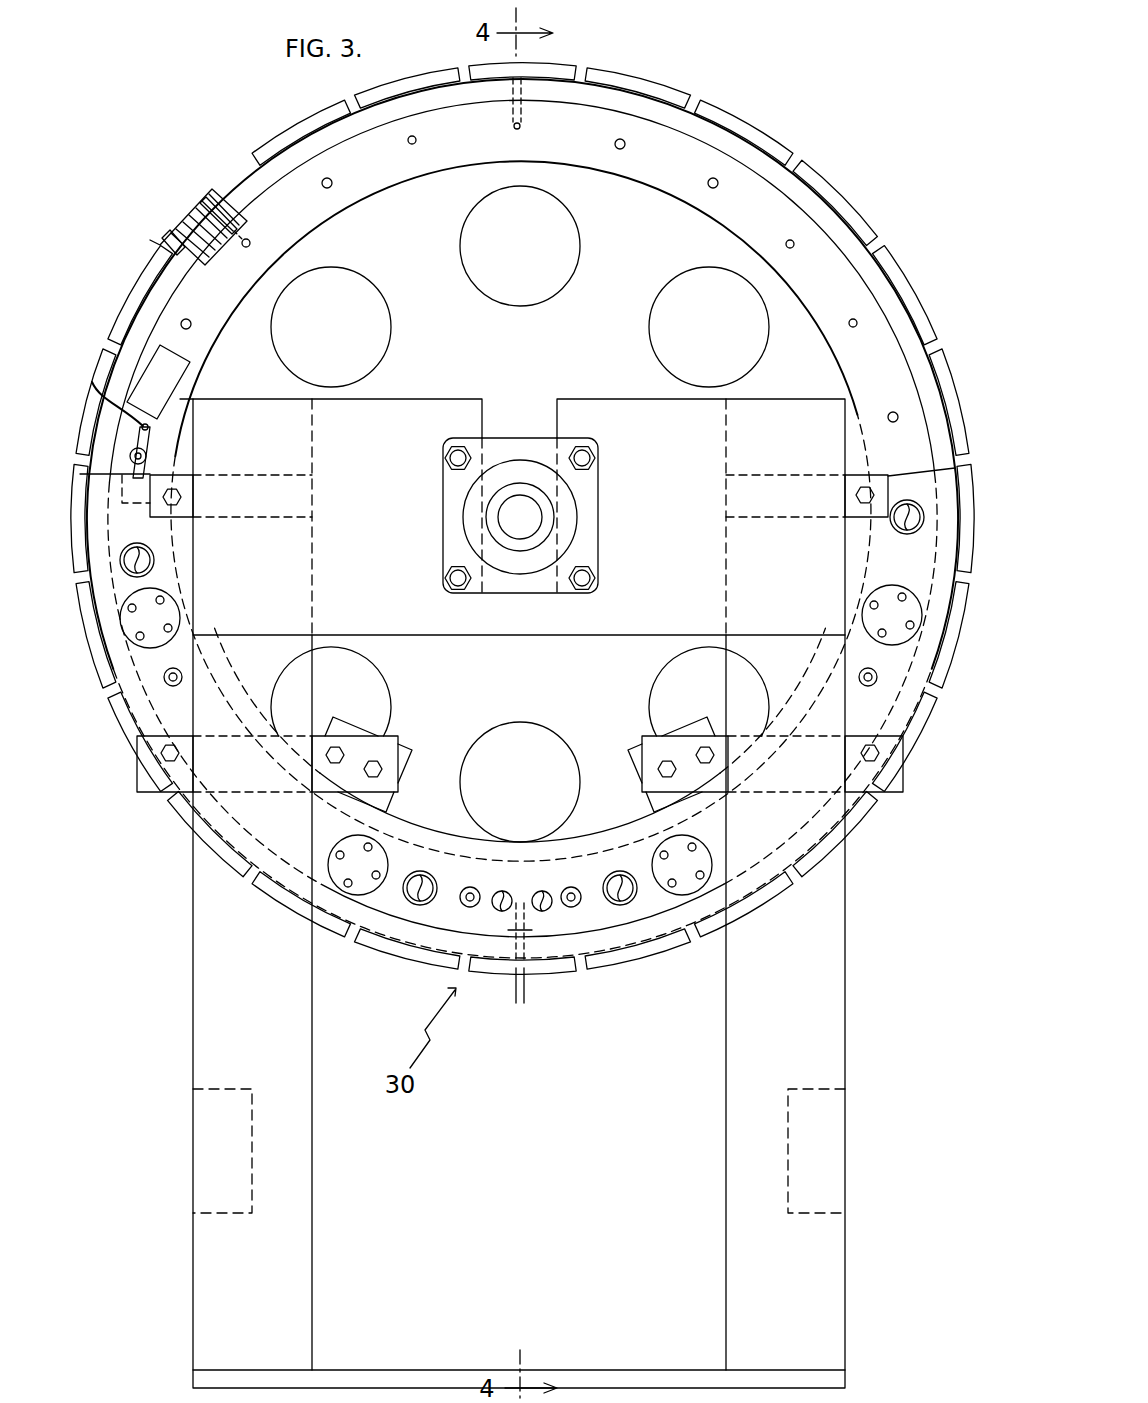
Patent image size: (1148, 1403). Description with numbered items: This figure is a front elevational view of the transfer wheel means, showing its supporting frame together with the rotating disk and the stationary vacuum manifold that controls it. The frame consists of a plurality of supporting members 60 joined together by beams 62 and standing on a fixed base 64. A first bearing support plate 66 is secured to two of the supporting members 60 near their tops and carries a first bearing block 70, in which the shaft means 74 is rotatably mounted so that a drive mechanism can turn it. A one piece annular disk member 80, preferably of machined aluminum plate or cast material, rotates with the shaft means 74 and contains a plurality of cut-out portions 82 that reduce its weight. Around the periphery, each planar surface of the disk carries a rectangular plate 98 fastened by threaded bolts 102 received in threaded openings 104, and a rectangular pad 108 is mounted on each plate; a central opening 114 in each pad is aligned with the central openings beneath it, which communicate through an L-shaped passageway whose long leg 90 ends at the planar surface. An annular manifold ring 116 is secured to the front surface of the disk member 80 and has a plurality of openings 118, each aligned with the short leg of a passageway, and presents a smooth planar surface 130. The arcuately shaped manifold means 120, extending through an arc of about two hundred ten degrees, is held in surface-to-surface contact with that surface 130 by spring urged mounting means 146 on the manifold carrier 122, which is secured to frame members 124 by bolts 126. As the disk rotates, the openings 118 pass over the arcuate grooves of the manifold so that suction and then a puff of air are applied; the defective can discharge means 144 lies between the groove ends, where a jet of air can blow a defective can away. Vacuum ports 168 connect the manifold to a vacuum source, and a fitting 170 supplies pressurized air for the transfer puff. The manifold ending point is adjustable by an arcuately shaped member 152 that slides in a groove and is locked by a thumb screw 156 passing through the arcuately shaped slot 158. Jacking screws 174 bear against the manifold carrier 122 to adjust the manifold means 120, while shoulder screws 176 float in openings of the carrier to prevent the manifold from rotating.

The supporting members 60 is at (208, 990).
The beams 62 is at (210, 1120).
The fixed base 64 is at (345, 1378).
The first bearing support plate 66 is at (370, 434).
The first bearing block 70 is at (445, 552).
The shaft means 74 is at (532, 517).
The annular disk member 80 is at (780, 212).
The cut-out portions 82 is at (388, 345).
The long leg 90 is at (512, 92).
The rectangular plate 98 is at (197, 215).
The threaded bolts 102 is at (170, 238).
The threaded openings 104 is at (190, 252).
The rectangular pad 108 is at (210, 192).
The central opening 114 is at (524, 1000).
The annular manifold ring 116 is at (386, 176).
The openings 118 is at (512, 125).
The manifold means 120 is at (152, 440).
The manifold carrier 122 is at (586, 842).
The frame members 124 is at (185, 513).
The bolts 126 is at (182, 494).
The smooth planar surface 130 is at (553, 138).
The defective can discharge means 144 is at (569, 890).
The spring urged mounting means 146 is at (160, 612).
The arcuately shaped member 152 is at (190, 366).
The thumb screw 156 is at (150, 458).
The arcuately shaped slot 158 is at (92, 388).
The vacuum ports 168 is at (145, 553).
The fitting 170 is at (190, 397).
The jacking screws 174 is at (162, 754).
The shoulder screws 176 is at (183, 673).